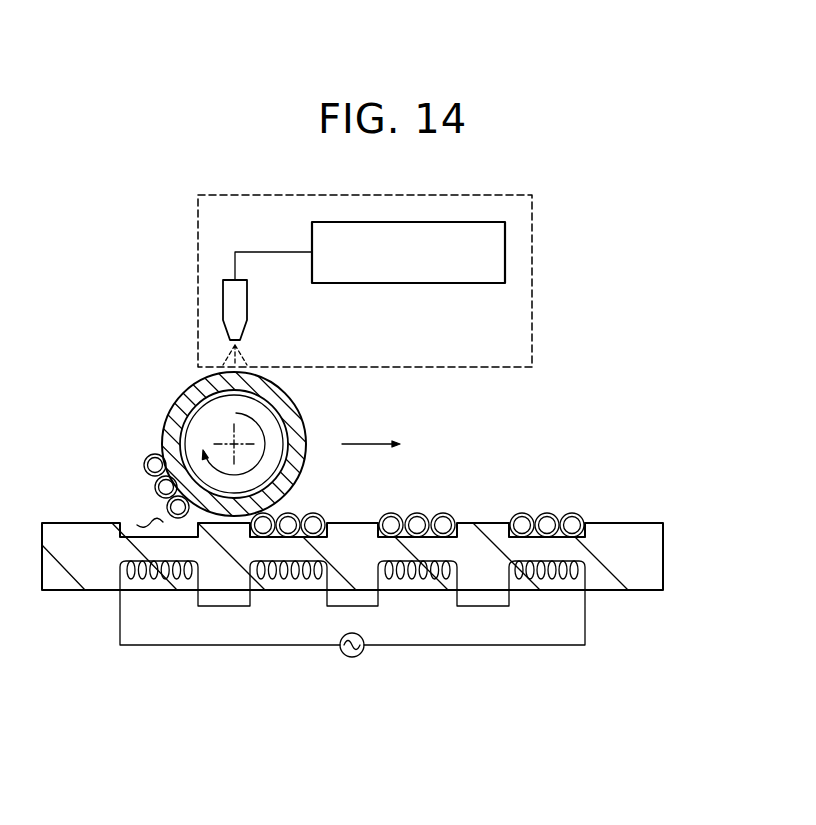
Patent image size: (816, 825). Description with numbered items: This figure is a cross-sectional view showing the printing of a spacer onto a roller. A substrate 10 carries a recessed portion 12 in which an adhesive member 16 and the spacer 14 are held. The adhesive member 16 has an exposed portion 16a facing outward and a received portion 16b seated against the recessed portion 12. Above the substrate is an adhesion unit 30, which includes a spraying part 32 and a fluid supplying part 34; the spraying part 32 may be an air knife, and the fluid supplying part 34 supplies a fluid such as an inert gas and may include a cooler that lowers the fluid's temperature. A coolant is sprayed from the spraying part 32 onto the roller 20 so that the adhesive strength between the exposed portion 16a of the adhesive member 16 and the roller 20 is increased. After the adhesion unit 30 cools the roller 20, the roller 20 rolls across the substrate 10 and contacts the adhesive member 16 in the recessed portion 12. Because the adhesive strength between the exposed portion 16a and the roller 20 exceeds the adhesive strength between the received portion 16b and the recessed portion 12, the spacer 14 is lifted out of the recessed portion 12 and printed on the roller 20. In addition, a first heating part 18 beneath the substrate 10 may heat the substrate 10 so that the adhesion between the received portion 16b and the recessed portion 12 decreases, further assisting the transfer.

The substrate 10 is at (605, 553).
The recessed portion 12 is at (152, 518).
The spacer 14 is at (570, 521).
The adhesive member 16 is at (565, 485).
The exposed portion 16a is at (513, 516).
The received portion 16b is at (587, 530).
The first heating part 18 is at (585, 615).
The roller 20 is at (292, 420).
The adhesion unit 30 is at (372, 281).
The spraying part 32 is at (223, 304).
The fluid supplying part 34 is at (505, 238).